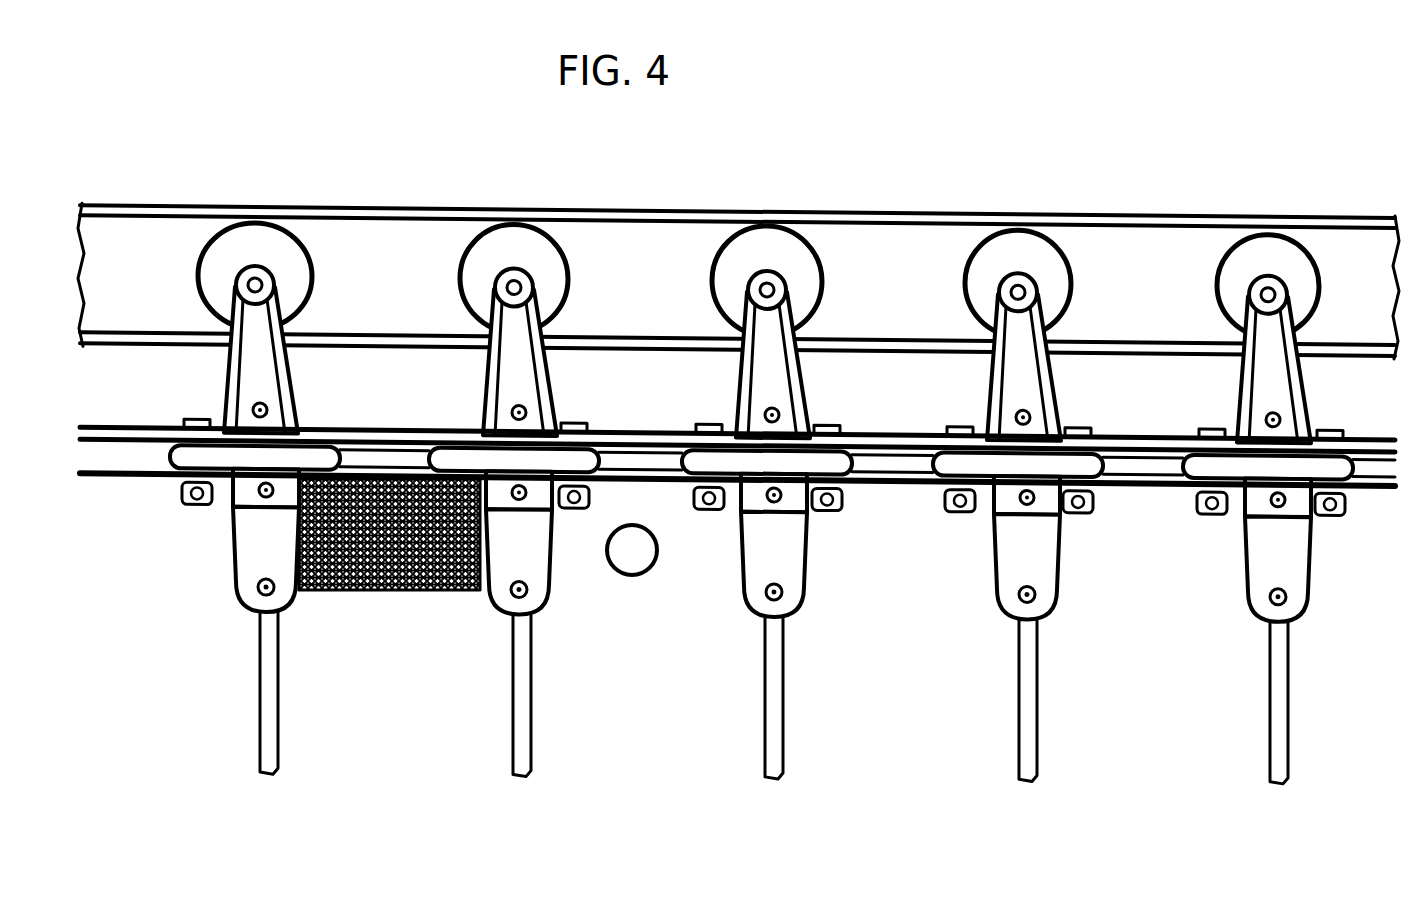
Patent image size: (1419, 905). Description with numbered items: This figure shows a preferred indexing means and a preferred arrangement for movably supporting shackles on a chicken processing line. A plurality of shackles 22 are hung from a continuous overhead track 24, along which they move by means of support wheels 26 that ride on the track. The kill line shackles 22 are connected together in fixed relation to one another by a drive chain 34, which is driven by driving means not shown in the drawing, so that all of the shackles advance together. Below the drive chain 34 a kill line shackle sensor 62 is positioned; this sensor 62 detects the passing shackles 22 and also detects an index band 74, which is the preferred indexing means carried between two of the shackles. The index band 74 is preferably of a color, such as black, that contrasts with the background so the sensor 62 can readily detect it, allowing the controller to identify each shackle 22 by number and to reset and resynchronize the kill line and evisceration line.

The shackle 22 is at (257, 728).
The overhead track 24 is at (143, 270).
The support wheel 26 is at (273, 253).
The drive chain 34 is at (895, 490).
The kill line shackle sensor 62 is at (640, 575).
The index band 74 is at (377, 590).